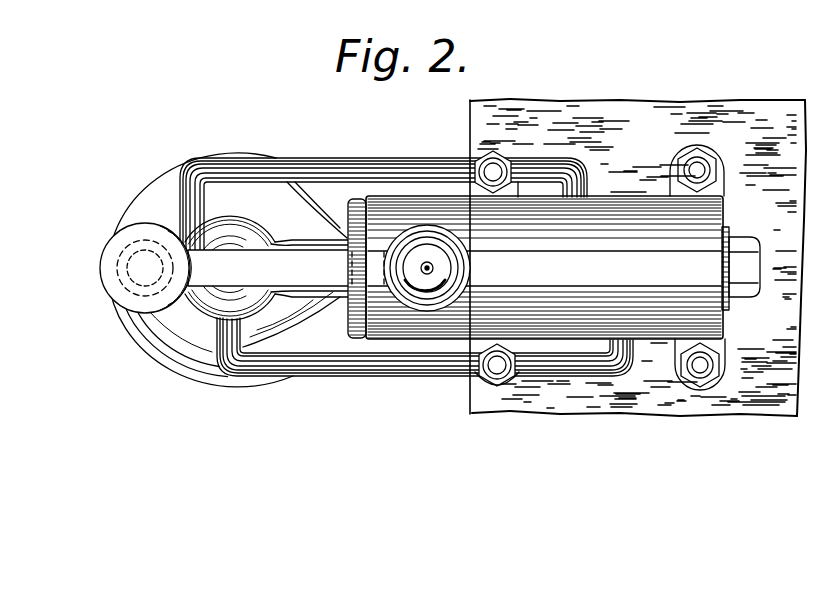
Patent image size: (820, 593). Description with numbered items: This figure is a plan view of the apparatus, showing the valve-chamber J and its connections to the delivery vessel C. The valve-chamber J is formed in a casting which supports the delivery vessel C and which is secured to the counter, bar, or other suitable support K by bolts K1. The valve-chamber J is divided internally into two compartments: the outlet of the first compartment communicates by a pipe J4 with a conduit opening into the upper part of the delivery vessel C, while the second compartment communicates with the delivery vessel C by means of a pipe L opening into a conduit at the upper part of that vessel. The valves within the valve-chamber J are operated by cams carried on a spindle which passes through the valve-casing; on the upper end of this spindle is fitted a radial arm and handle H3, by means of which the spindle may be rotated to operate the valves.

The radial arm and handle H3 is at (162, 257).
The pipe L is at (387, 172).
The support K is at (638, 257).
The bolts K1 is at (697, 162).
The valve-chamber J is at (554, 267).
The pipe J4 is at (427, 360).
The delivery vessel C is at (208, 365).